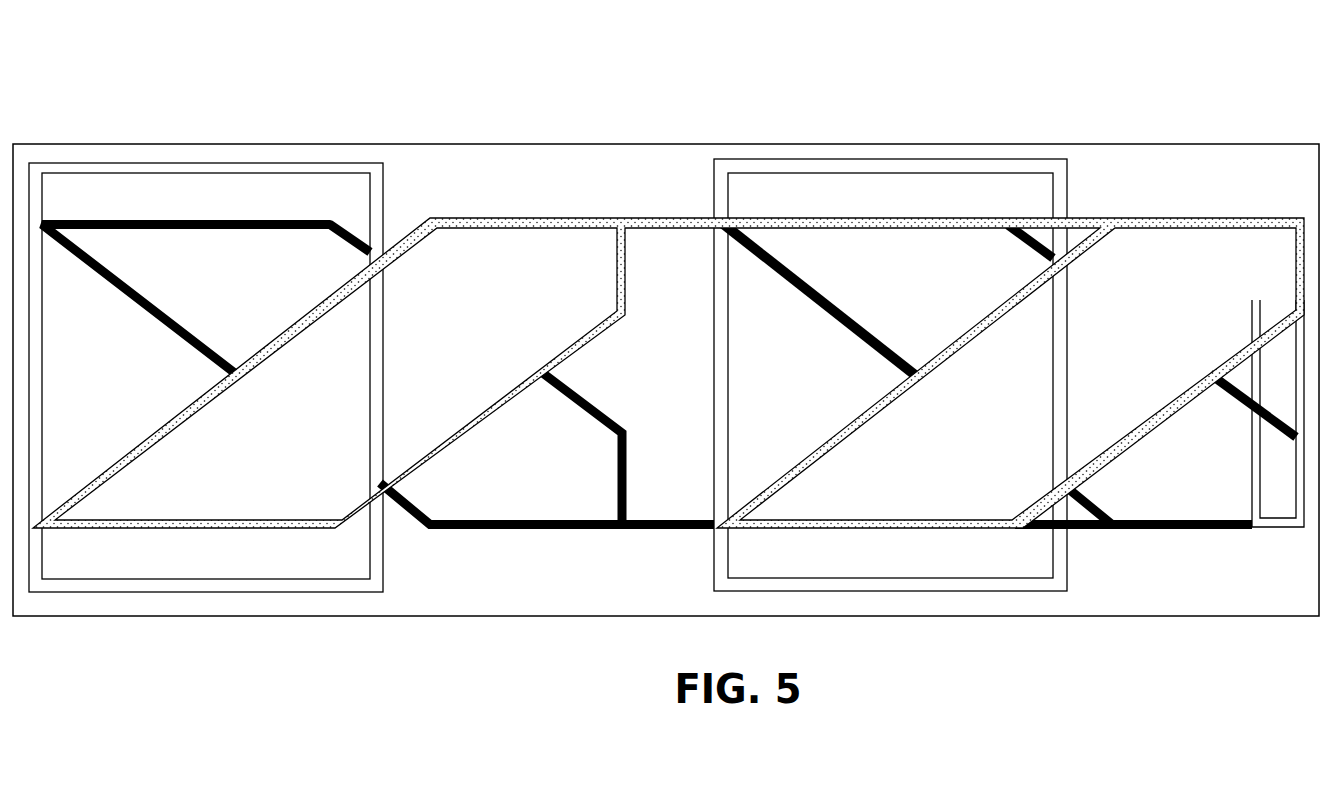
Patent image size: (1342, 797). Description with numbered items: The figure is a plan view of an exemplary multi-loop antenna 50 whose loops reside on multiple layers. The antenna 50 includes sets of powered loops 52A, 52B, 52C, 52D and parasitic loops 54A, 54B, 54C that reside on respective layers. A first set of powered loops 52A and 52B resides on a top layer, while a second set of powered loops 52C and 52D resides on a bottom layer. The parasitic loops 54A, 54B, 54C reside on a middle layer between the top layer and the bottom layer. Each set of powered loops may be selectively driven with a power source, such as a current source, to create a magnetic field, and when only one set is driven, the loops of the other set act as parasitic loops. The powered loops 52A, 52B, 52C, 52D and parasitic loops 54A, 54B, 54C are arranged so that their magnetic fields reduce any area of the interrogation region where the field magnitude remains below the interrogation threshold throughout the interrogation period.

The multi-loop antenna 50 is at (666, 319).
The powered loop 52A is at (607, 322).
The powered loop 52B is at (1173, 237).
The powered loop 52C is at (252, 243).
The powered loop 52D is at (875, 315).
The parasitic loop 54A is at (378, 190).
The parasitic loop 54B is at (1060, 182).
The parasitic loop 54C is at (1278, 530).